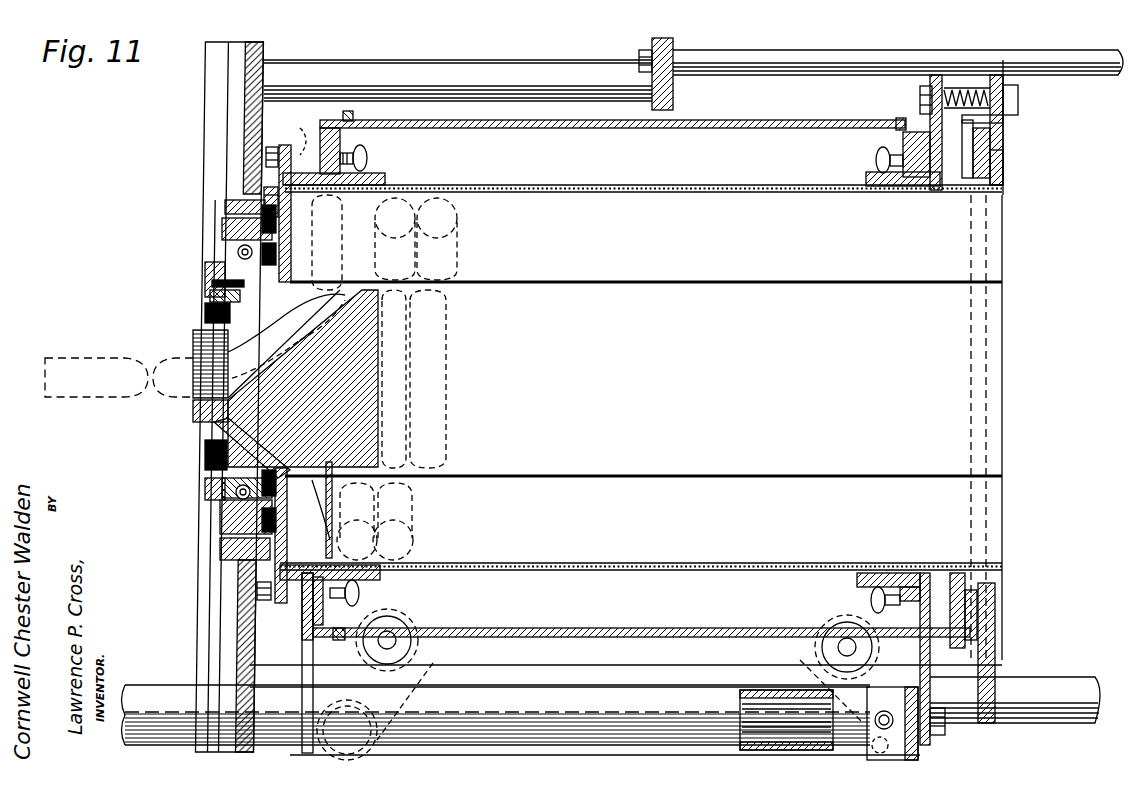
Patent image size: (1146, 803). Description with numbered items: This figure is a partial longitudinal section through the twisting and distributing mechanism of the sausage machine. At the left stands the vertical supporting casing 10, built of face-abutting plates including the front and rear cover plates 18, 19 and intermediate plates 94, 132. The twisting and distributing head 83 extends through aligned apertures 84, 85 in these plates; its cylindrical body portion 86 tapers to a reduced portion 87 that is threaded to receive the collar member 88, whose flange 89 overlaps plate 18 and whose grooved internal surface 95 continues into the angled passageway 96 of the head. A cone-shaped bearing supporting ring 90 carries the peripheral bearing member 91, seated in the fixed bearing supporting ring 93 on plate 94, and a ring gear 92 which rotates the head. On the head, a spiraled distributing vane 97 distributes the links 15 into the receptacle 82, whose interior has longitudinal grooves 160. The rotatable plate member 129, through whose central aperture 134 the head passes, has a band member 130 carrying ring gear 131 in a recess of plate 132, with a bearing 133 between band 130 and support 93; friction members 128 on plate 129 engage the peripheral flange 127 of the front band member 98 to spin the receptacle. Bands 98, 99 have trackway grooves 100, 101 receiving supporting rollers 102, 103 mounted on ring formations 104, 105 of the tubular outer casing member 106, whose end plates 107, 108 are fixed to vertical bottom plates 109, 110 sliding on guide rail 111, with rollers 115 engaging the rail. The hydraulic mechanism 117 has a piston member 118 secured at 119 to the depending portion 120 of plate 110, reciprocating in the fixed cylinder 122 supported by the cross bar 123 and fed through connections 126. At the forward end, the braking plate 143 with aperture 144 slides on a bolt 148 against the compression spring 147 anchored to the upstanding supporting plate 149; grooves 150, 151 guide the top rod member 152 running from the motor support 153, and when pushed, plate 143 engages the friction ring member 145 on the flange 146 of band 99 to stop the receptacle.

The vertical supporting casing 10 is at (236, 42).
The front cover plate 18 is at (205, 105).
The rear cover plate 19 is at (266, 78).
The motor support 153 is at (536, 64).
The top bar or rod member 152 is at (1103, 50).
The top groove 150 is at (1000, 80).
The groove 151 is at (936, 75).
The bolt 148 is at (962, 88).
The compression spring 147 is at (996, 75).
The upstanding supporting plate 149 is at (920, 100).
The ring formation 105 is at (905, 132).
The radially extending flange 146 is at (990, 148).
The friction ring member 145 is at (1004, 160).
The braking plate 143 is at (1004, 180).
The end plate member 108 is at (978, 135).
The aperture 144 is at (1002, 200).
The supporting rollers 102 is at (420, 120).
The tubular outer casing member 106 is at (733, 121).
The ring formation 104 is at (352, 115).
The trackway forming groove 100 is at (341, 150).
The trackway forming groove 101 is at (875, 175).
The supporting rollers 103 is at (876, 158).
The rear band member 99 is at (866, 180).
The front band member 98 is at (372, 178).
The longitudinally extending grooves 160 is at (708, 195).
The receptacle 82 is at (955, 348).
The friction members 128 is at (275, 612).
The peripheral flange 127 is at (286, 168).
The end plate member 107 is at (308, 128).
The rotatable ring or plate member 129 is at (268, 192).
The aperture 85 is at (248, 205).
The bearing supporting band member 130 is at (228, 232).
The intermediate plate 94 is at (212, 250).
The bearing supporting ring 93 is at (205, 272).
The peripheral bearing member 91 is at (210, 286).
The ring gear 92 is at (210, 305).
The aperture 84 is at (205, 325).
The collar member 88 is at (193, 343).
The internal surface 95 is at (193, 400).
The flange 89 is at (200, 430).
The reduced diameter portion 87 is at (205, 440).
The bearing 133 is at (225, 486).
The ring gear 131 is at (235, 530).
The intermediate plate member 132 is at (222, 613).
The cylindrical body portion 86 is at (364, 430).
The twisting and distributing head 83 is at (378, 330).
The passageway 96 is at (335, 305).
The spiraled distributing flange or vane 97 is at (296, 260).
The central aperture 134 is at (265, 258).
The cone-shaped bearing supporting ring 90 is at (308, 509).
The links 15 is at (360, 536).
The vertical bottom plate 109 is at (302, 651).
The hydraulic mechanism 117 is at (165, 686).
The fixed cylinder 122 is at (558, 692).
The piston member 118 is at (765, 702).
The rollers 115 is at (418, 648).
The connections 126 is at (884, 710).
The cross bar 123 is at (918, 752).
The vertical bottom plate 110 is at (930, 630).
The central depending portion 120 is at (935, 682).
The piston attachment 119 is at (946, 728).
The supporting guide rod or rail 111 is at (1075, 690).